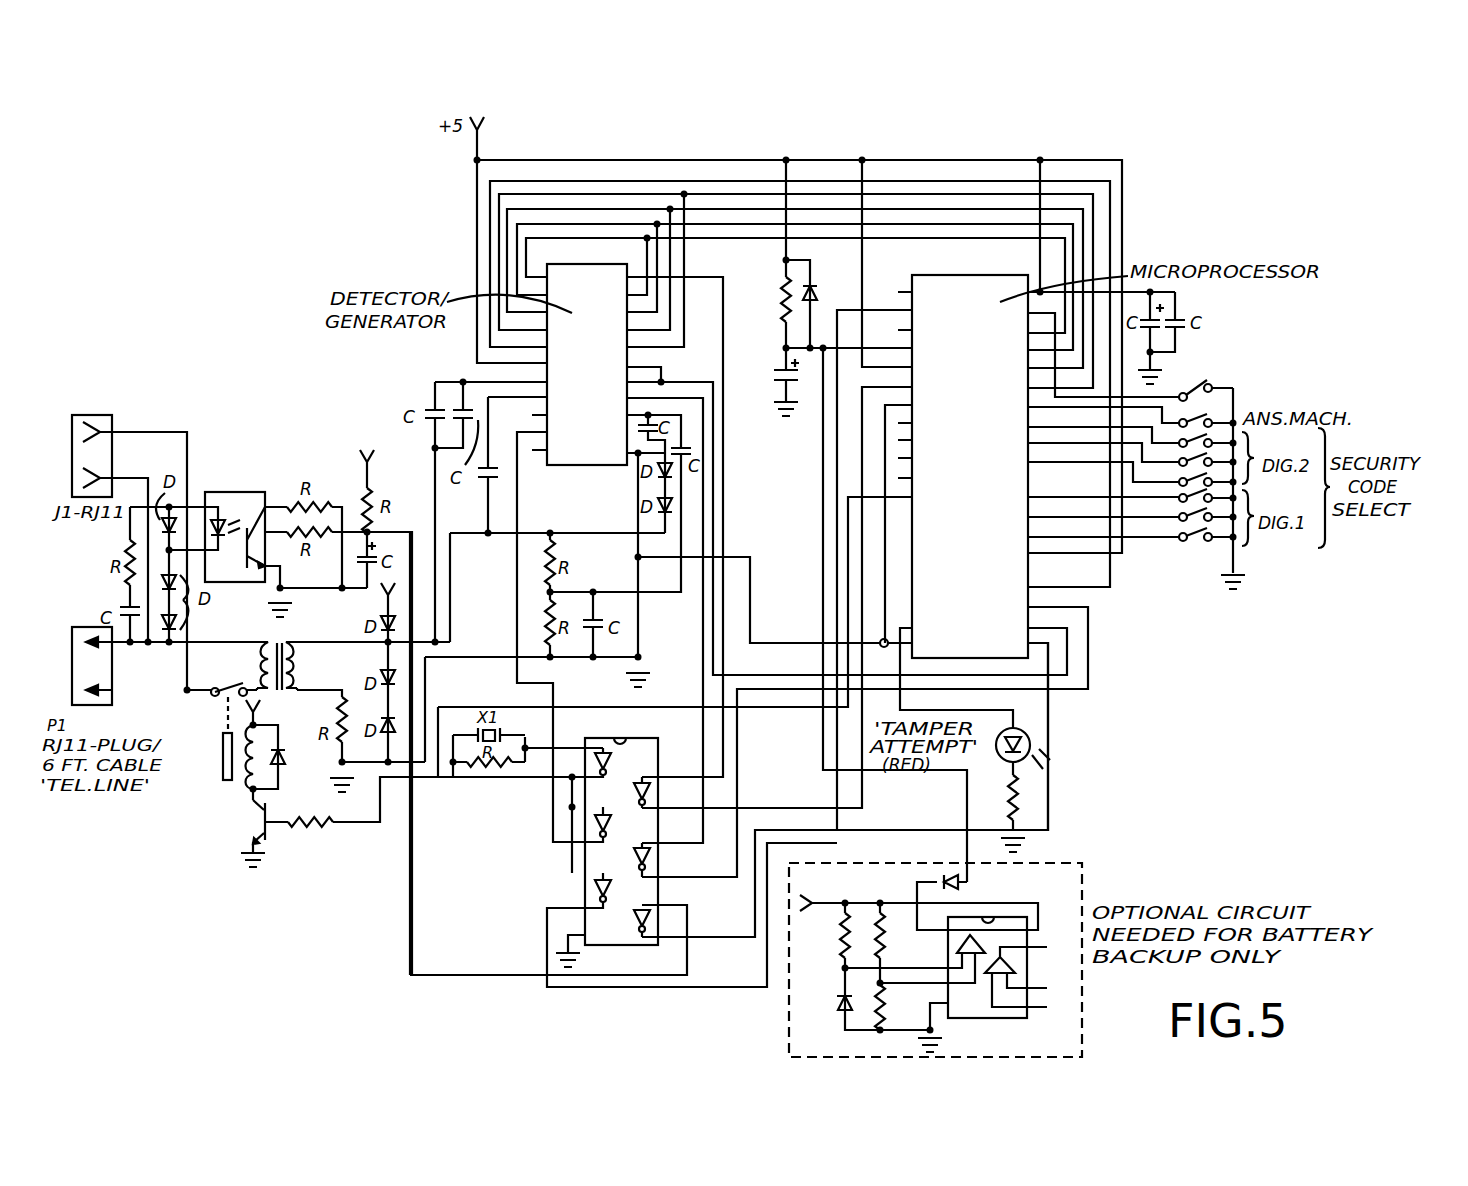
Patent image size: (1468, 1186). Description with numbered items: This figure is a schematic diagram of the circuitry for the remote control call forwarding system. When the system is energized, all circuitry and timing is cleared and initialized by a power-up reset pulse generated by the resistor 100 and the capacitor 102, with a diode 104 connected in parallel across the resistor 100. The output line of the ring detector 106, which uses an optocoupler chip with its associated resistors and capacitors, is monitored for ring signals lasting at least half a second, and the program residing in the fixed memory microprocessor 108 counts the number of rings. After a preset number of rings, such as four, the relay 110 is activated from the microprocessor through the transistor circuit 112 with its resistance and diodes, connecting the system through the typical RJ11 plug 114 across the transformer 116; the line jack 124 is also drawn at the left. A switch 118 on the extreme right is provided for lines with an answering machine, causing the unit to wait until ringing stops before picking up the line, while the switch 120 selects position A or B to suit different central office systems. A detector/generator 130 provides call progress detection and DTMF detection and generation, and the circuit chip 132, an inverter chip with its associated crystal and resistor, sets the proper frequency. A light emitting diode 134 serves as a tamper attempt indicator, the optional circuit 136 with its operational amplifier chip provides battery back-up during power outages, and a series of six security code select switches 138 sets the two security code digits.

The resistor 100 is at (781, 306).
The capacitor 102 is at (772, 378).
The diode 104 is at (818, 300).
The ring detector 106 is at (303, 463).
The microprocessor 108 is at (985, 456).
The relay 110 is at (212, 733).
The transistor circuit 112 is at (279, 803).
The RJ11 plug 114 is at (82, 627).
The transformer 116 is at (270, 638).
The switch 118 is at (1205, 418).
The switch 120 is at (1250, 354).
The RJ11 jack J1 124 is at (97, 415).
The detector/generator 130 is at (572, 470).
The circuit chip 132 is at (585, 888).
The light emitting diode 134 is at (990, 762).
The optional circuit 136 is at (789, 1011).
The security code select switches 138 is at (1214, 560).